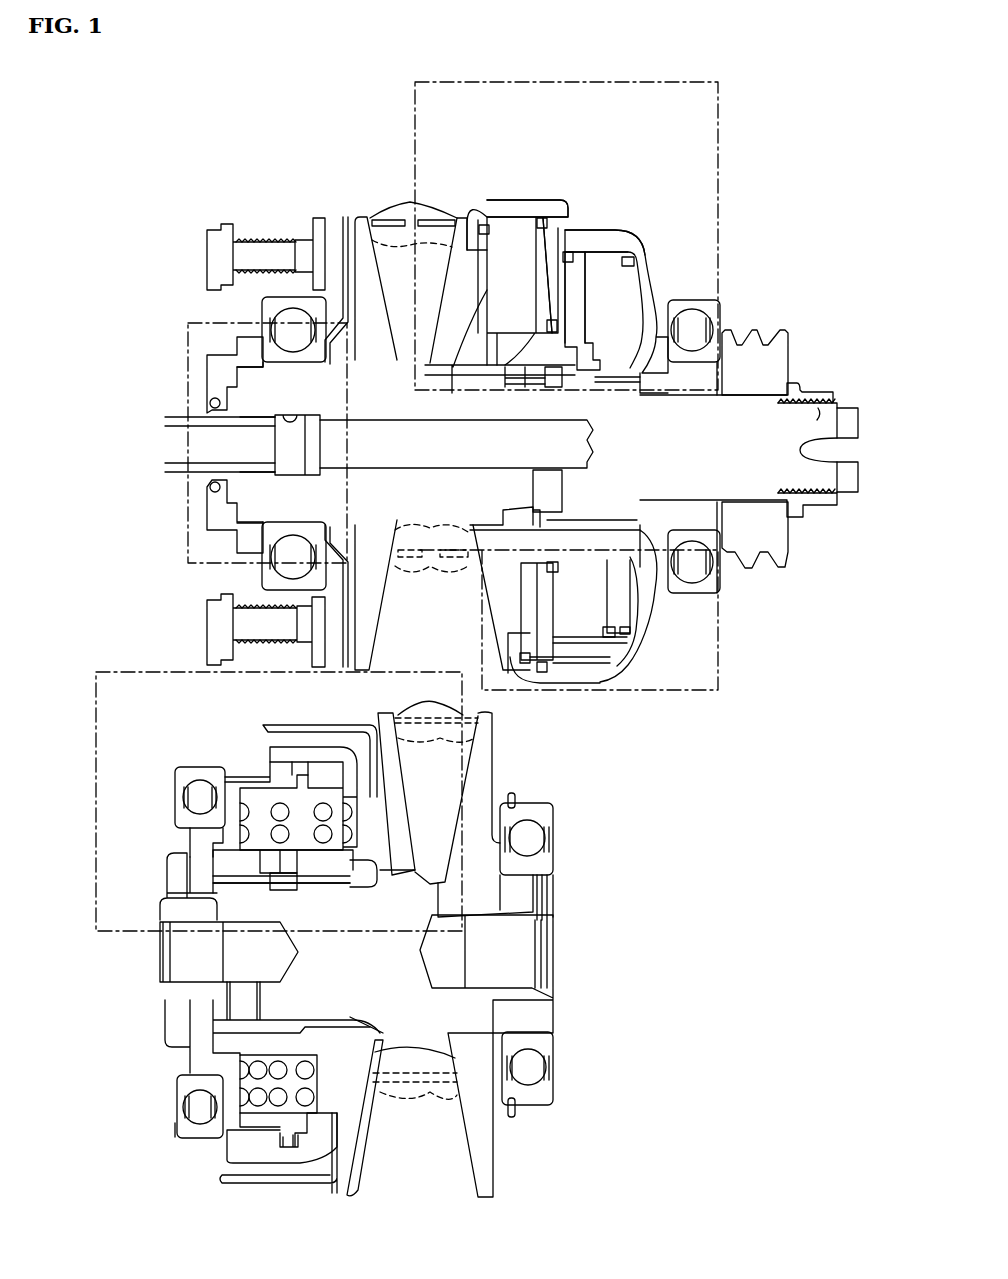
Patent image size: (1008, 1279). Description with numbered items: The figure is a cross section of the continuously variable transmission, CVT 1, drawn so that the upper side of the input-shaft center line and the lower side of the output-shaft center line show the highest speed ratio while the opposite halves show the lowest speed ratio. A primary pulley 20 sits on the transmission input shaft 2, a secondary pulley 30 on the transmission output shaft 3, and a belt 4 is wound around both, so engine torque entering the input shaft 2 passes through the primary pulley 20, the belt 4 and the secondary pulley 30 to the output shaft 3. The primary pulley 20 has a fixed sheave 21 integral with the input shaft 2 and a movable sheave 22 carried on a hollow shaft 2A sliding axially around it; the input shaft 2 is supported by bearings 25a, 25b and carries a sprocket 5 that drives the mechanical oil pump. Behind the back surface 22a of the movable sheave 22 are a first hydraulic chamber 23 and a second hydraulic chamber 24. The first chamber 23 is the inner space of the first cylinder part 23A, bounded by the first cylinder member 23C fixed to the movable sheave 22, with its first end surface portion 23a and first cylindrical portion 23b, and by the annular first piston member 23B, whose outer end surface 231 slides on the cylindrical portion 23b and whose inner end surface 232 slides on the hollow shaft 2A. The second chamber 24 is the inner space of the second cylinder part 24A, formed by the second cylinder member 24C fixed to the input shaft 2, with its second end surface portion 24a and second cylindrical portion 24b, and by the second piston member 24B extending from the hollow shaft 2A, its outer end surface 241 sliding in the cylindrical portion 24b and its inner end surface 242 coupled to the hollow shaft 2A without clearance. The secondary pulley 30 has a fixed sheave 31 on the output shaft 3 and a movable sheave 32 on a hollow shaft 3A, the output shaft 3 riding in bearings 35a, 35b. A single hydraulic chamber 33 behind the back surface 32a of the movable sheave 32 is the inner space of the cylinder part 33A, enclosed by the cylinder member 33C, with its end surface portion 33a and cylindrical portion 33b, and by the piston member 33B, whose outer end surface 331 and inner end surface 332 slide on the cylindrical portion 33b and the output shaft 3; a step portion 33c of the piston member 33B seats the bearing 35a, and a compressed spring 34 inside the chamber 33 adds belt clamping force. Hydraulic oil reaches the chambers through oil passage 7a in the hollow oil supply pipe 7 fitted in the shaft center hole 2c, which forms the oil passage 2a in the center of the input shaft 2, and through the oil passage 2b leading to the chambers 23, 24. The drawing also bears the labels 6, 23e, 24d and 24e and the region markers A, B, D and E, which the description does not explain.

The CVT 1 is at (761, 210).
The transmission input shaft 2 is at (833, 405).
The oil passage 2a is at (456, 444).
The oil passage 2b is at (547, 491).
The shaft center hole 2c is at (300, 415).
The hollow shaft 2A is at (558, 388).
The transmission output shaft 3 is at (533, 890).
The hollow shaft 3A is at (320, 865).
The belt 4 is at (408, 212).
The sprocket 5 is at (790, 357).
The seal member 6 is at (207, 370).
The oil supply pipe 7 is at (172, 474).
The oil passage 7a is at (249, 444).
The primary pulley 20 is at (667, 168).
The fixed sheave 21 is at (349, 212).
The movable sheave 22 is at (464, 204).
The back surface 22a is at (452, 377).
The first hydraulic chamber 23 is at (553, 430).
The first cylinder part 23A is at (525, 153).
The first piston member 23B is at (548, 240).
The first cylinder member 23C is at (492, 197).
The first end surface portion 23a is at (509, 283).
The first cylindrical portion 23b is at (515, 200).
The cylinder pin 23e is at (489, 233).
The outer circumferential end surface 231 is at (544, 217).
The inner circumferential end surface 232 is at (512, 387).
The second hydraulic chamber 24 is at (588, 456).
The second cylinder part 24A is at (611, 168).
The second piston member 24B is at (612, 298).
The second cylinder member 24C is at (647, 244).
The second end surface portion 24a is at (636, 262).
The second cylindrical portion 24b is at (603, 230).
The piston chamber 24d is at (600, 258).
The piston web 24e is at (588, 312).
The outer circumferential end surface 241 is at (570, 252).
The inner circumferential end surface 242 is at (600, 384).
The bearing 25a is at (287, 318).
The bearing 25b is at (690, 330).
The secondary pulley 30 is at (587, 770).
The fixed sheave 31 is at (495, 716).
The movable sheave 32 is at (395, 760).
The back surface 32a is at (363, 862).
The hydraulic chamber 33 is at (292, 955).
The cylinder part 33A is at (250, 741).
The piston member 33B is at (242, 775).
The cylinder member 33C is at (328, 736).
The end surface portion 33a is at (360, 790).
The cylindrical portion 33b is at (348, 727).
The step portion 33c is at (190, 825).
The outer circumferential end surface 331 is at (282, 760).
The inner circumferential end surface 332 is at (162, 910).
The spring 34 is at (280, 890).
The bearing 35a is at (193, 797).
The bearing 35b is at (532, 842).
The region A is at (722, 625).
The region B is at (722, 140).
The region D is at (153, 672).
The region E is at (188, 333).